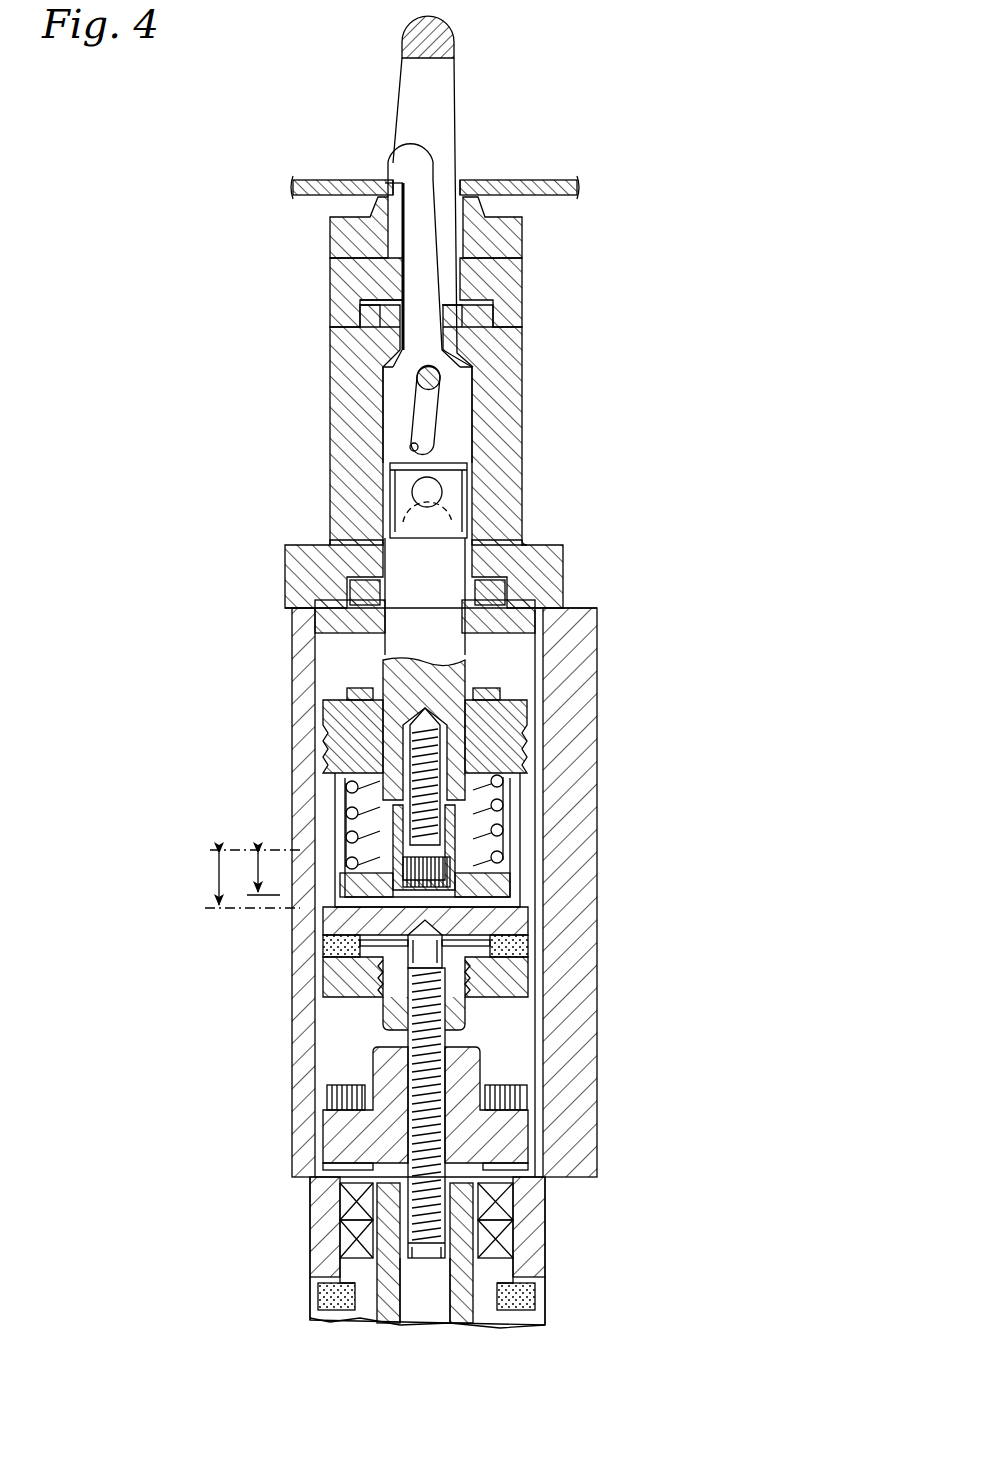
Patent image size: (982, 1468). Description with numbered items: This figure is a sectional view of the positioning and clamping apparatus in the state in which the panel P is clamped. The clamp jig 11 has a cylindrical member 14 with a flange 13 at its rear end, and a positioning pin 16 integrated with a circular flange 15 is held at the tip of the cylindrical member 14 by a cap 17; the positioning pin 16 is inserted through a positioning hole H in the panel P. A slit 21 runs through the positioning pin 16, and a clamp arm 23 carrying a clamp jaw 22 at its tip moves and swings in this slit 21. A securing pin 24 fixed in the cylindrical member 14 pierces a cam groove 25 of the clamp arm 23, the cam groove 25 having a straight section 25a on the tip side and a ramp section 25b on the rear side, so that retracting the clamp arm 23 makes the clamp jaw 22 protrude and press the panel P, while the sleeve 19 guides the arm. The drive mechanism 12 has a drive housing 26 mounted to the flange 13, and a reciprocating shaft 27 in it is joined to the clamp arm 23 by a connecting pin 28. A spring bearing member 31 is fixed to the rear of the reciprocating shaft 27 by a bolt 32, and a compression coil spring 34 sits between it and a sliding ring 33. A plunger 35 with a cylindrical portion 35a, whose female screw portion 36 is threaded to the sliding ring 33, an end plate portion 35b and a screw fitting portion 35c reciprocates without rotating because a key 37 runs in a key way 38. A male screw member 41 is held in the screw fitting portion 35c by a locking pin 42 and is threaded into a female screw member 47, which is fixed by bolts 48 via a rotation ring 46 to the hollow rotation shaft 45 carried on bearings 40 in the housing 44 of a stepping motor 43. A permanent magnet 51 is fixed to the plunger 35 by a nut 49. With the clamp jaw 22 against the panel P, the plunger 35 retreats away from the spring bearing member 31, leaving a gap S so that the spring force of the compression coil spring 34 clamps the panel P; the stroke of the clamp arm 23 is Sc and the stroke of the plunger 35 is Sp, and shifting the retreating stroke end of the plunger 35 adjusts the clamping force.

The clamp jig 11 is at (533, 347).
The drive mechanism 12 is at (608, 763).
The flange 13 is at (535, 575).
The cylindrical member 14 is at (508, 442).
The circular flange 15 is at (333, 290).
The positioning pin 16 is at (455, 40).
The cap 17 is at (333, 228).
The guide sleeve 19 is at (375, 183).
The slit 21 is at (440, 102).
The clamp jaw 22 is at (397, 165).
The clamp arm 23 is at (420, 292).
The securing pin 24 is at (420, 378).
The cam groove 25 is at (415, 413).
The straight section 25a is at (432, 408).
The ramp section 25b is at (413, 453).
The drive housing 26 is at (585, 1035).
The reciprocating shaft 27 is at (470, 663).
The connecting pin 28 is at (430, 492).
The spring bearing member 31 is at (445, 852).
The bolt 32 is at (410, 748).
The sliding ring 33 is at (495, 713).
The compression coil spring 34 is at (465, 830).
The plunger 35 is at (490, 945).
The cylindrical portion 35a is at (335, 775).
The end plate portion 35b is at (320, 925).
The screw fitting portion 35c is at (372, 1000).
The female screw portion 36 is at (500, 742).
The key 37 is at (515, 810).
The key way 38 is at (530, 1110).
The bearings 40 is at (343, 1225).
The male screw member 41 is at (440, 1080).
The locking pin 42 is at (500, 915).
The stepping motor 43 is at (548, 1238).
The housing 44 is at (515, 1192).
The hollow rotation shaft 45 is at (500, 1252).
The rotation ring 46 is at (530, 1147).
The female screw member 47 is at (340, 1062).
The bolts 48 is at (330, 1097).
The nut 49 is at (505, 990).
The permanent magnet 51 is at (330, 945).
The positioning hole H is at (470, 183).
The panel P is at (545, 183).
The gap S is at (495, 898).
The reciprocating stroke of the clamp arm Sc is at (247, 873).
The reciprocating stroke of the plunger Sp is at (213, 875).